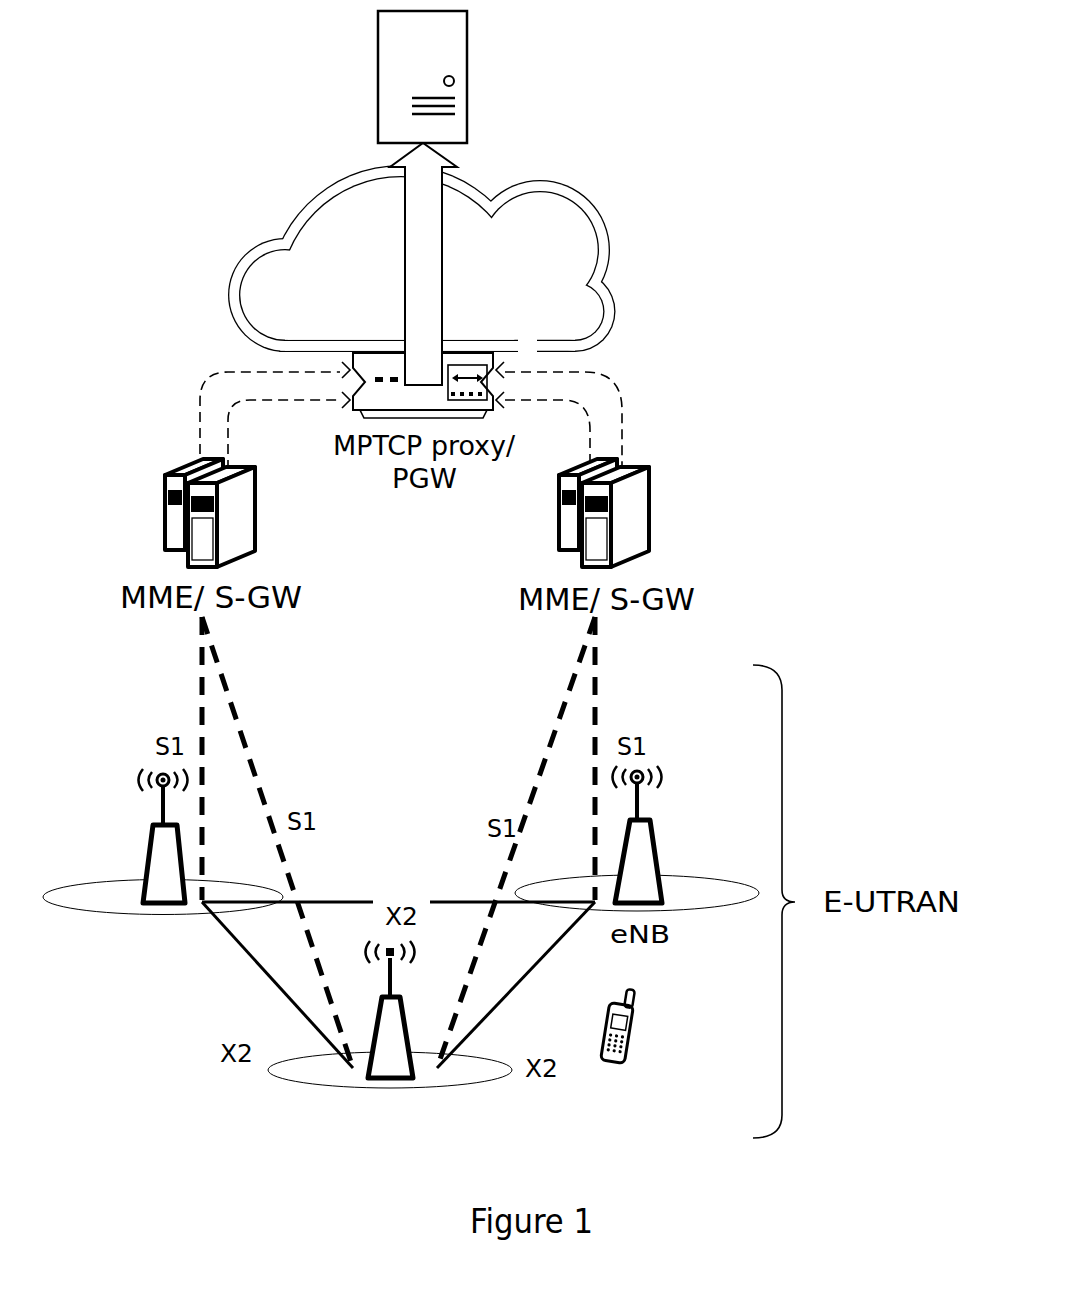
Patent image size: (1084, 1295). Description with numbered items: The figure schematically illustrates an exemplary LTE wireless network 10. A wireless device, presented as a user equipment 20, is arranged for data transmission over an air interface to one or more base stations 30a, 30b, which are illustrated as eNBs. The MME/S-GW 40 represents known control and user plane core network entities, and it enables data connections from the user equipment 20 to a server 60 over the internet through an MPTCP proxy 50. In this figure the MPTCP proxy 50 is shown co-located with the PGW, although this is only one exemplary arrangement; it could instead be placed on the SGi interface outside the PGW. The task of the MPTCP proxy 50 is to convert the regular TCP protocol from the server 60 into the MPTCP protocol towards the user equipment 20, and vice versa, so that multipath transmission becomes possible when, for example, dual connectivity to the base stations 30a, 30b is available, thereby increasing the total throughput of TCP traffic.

The LTE wireless network 10 is at (707, 541).
The user equipment 20 is at (637, 1010).
The base station 30a is at (167, 865).
The base station 30b is at (353, 1053).
The MME/S-GW 40 is at (240, 553).
The MPTCP proxy 50 is at (448, 377).
The server 60 is at (452, 49).